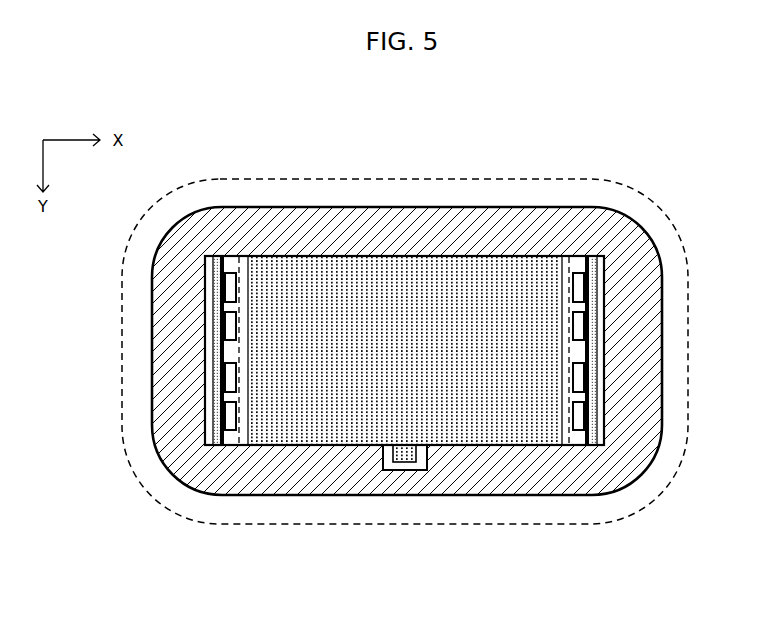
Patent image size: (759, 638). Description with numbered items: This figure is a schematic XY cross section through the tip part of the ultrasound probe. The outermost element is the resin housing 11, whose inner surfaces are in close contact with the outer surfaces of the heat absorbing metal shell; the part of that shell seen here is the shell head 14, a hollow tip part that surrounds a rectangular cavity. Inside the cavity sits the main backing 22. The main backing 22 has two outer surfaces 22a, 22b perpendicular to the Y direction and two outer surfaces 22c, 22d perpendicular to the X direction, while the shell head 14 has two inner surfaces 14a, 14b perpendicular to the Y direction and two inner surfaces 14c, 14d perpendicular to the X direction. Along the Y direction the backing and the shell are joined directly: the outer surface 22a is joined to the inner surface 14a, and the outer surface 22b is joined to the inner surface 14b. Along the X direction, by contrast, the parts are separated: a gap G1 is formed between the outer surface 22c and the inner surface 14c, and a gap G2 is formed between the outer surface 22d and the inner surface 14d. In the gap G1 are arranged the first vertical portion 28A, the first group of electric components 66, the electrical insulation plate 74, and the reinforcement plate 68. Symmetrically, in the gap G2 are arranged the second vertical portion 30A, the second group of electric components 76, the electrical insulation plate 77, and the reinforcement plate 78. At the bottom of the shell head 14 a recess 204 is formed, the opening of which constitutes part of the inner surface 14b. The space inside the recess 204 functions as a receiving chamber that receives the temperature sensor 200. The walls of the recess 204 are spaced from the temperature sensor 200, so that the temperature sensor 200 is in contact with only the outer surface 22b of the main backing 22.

The resin housing 11 is at (667, 222).
The shell head 14 is at (451, 198).
The inner surface 14a is at (332, 257).
The inner surface 14b is at (318, 445).
The inner surface 14c is at (577, 378).
The inner surface 14d is at (222, 351).
The main backing 22 is at (498, 256).
The outer surface 22a is at (300, 256).
The outer surface 22b is at (277, 445).
The outer surface 22c is at (598, 421).
The outer surface 22d is at (222, 380).
The second vertical portion 30A is at (221, 266).
The first vertical portion 28A is at (586, 264).
The gap G1 is at (577, 264).
The gap G2 is at (230, 266).
The electrical insulation plate 74 is at (569, 264).
The electrical insulation plate 77 is at (242, 264).
The reinforcement plate 78 is at (212, 287).
The reinforcement plate 68 is at (593, 318).
The second group of electric components 76 is at (232, 445).
The first group of electric components 66 is at (577, 445).
The temperature sensor 200 is at (400, 462).
The recess 204 is at (430, 447).